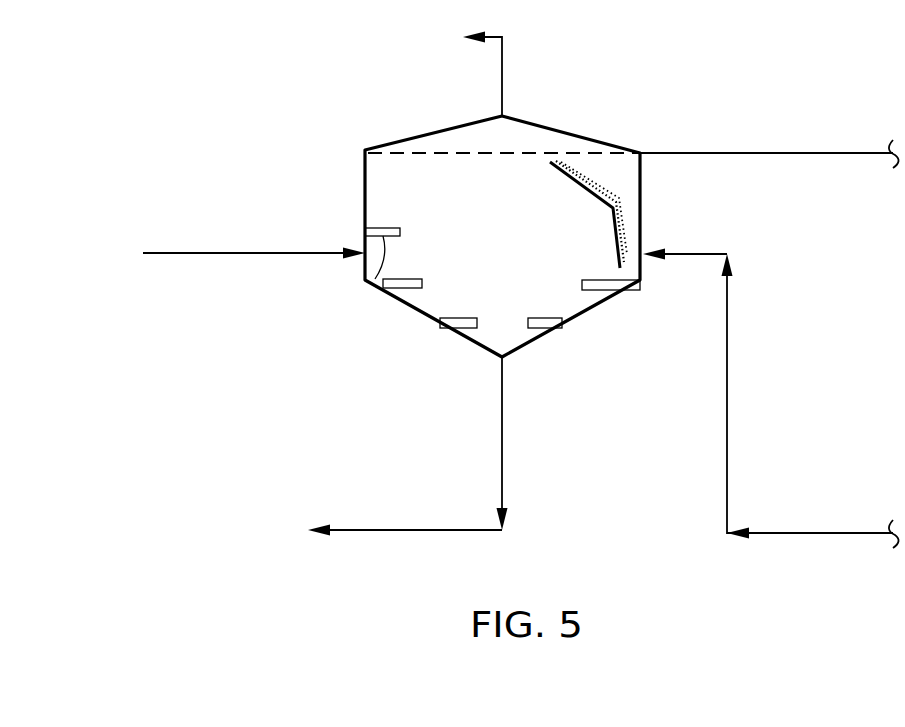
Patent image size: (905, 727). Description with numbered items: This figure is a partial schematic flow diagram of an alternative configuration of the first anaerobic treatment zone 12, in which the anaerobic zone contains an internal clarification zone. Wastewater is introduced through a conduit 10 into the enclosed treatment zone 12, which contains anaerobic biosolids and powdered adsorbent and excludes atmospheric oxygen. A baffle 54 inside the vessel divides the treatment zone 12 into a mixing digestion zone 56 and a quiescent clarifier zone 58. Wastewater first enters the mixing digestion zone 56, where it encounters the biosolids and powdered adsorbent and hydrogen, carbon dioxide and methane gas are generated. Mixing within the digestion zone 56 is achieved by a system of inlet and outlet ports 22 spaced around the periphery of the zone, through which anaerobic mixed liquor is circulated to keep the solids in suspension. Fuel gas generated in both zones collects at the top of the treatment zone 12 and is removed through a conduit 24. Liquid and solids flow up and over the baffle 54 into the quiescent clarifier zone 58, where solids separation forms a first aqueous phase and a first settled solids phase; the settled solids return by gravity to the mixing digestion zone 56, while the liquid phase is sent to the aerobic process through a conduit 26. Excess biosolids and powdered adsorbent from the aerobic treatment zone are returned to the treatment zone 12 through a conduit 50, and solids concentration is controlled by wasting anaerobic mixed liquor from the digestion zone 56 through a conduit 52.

The conduit 10 is at (270, 250).
The first anaerobic treatment zone 12 is at (421, 136).
The inlet and outlet ports 22 is at (468, 330).
The conduit 24 is at (503, 72).
The conduit 26 is at (703, 152).
The conduit 50 is at (727, 348).
The conduit 52 is at (503, 465).
The baffle 54 is at (620, 218).
The mixing digestion zone 56 is at (527, 257).
The quiescent clarifier zone 58 is at (634, 187).